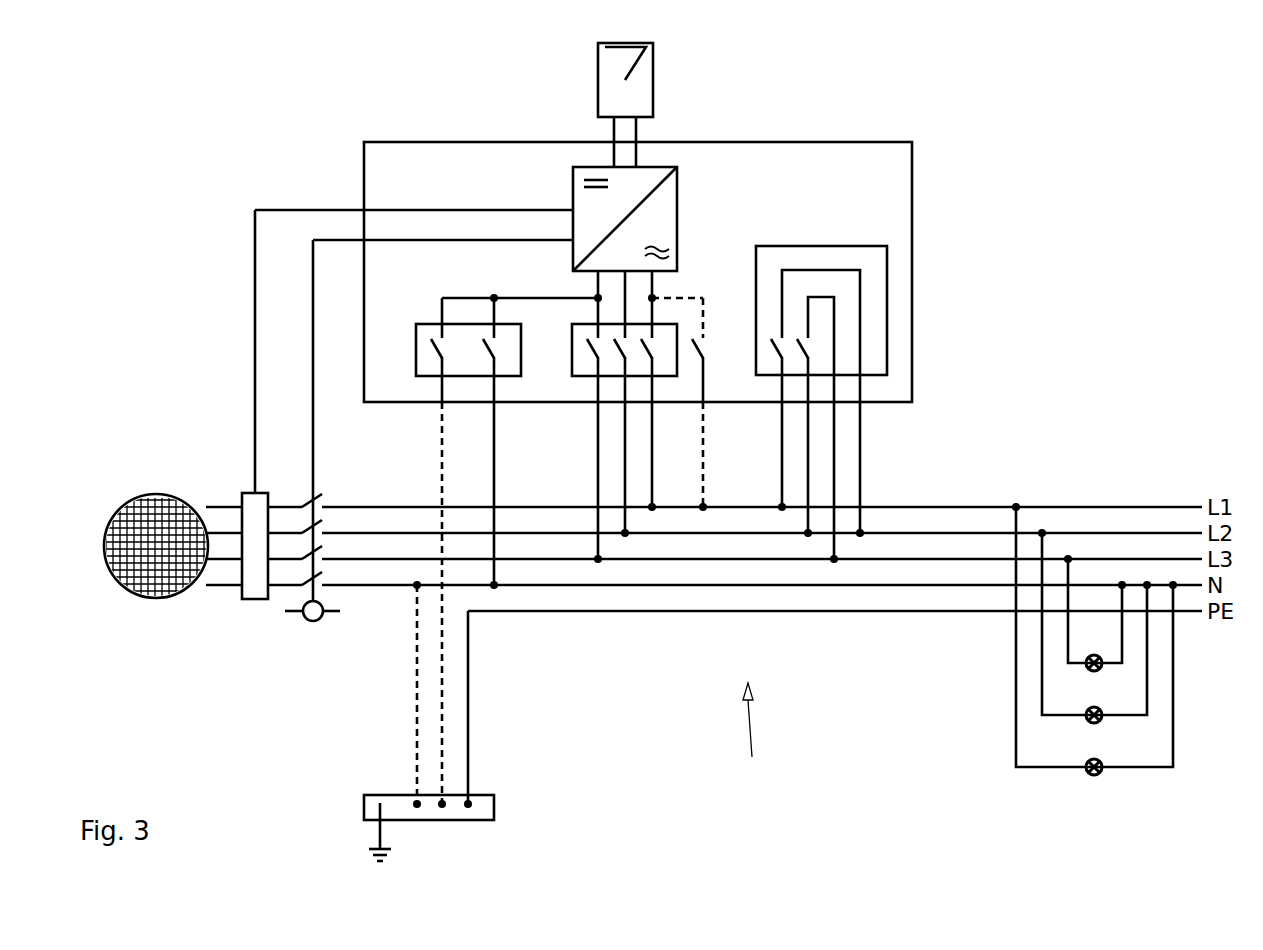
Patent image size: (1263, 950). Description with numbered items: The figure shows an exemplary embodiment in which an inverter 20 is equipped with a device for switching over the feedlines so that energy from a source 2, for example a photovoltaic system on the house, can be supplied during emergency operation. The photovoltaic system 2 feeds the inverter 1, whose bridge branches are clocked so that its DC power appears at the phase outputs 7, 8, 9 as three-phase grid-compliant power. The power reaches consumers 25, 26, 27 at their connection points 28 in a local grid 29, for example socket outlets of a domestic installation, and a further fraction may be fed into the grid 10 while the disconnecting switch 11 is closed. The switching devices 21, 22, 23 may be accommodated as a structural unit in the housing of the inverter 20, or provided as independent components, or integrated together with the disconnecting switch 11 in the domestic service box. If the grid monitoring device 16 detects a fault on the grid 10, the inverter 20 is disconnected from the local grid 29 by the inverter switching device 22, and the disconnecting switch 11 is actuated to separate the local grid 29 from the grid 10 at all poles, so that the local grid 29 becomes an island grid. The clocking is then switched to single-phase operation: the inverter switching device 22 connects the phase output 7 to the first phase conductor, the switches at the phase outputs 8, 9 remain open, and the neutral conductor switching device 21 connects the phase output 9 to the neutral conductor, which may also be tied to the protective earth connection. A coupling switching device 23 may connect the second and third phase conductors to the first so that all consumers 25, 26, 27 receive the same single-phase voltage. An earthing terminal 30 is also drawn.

The inverter 1 is at (680, 222).
The photovoltaic system 2 is at (653, 62).
The phase output 7 is at (652, 285).
The phase output 8 is at (625, 281).
The phase output 9 is at (598, 297).
The grid 10 is at (158, 494).
The disconnecting switch 11 is at (312, 622).
The grid monitoring device 16 is at (250, 598).
The inverter 20 is at (912, 213).
The neutral conductor switching device 21 is at (416, 358).
The inverter switching device 22 is at (578, 375).
The coupling switching device 23 is at (887, 362).
The consumer 25 is at (1083, 668).
The consumer 26 is at (1083, 720).
The consumer 27 is at (1083, 772).
The connection points 28 is at (1068, 559).
The local grid 29 is at (755, 738).
The grounding terminal 30 is at (494, 803).